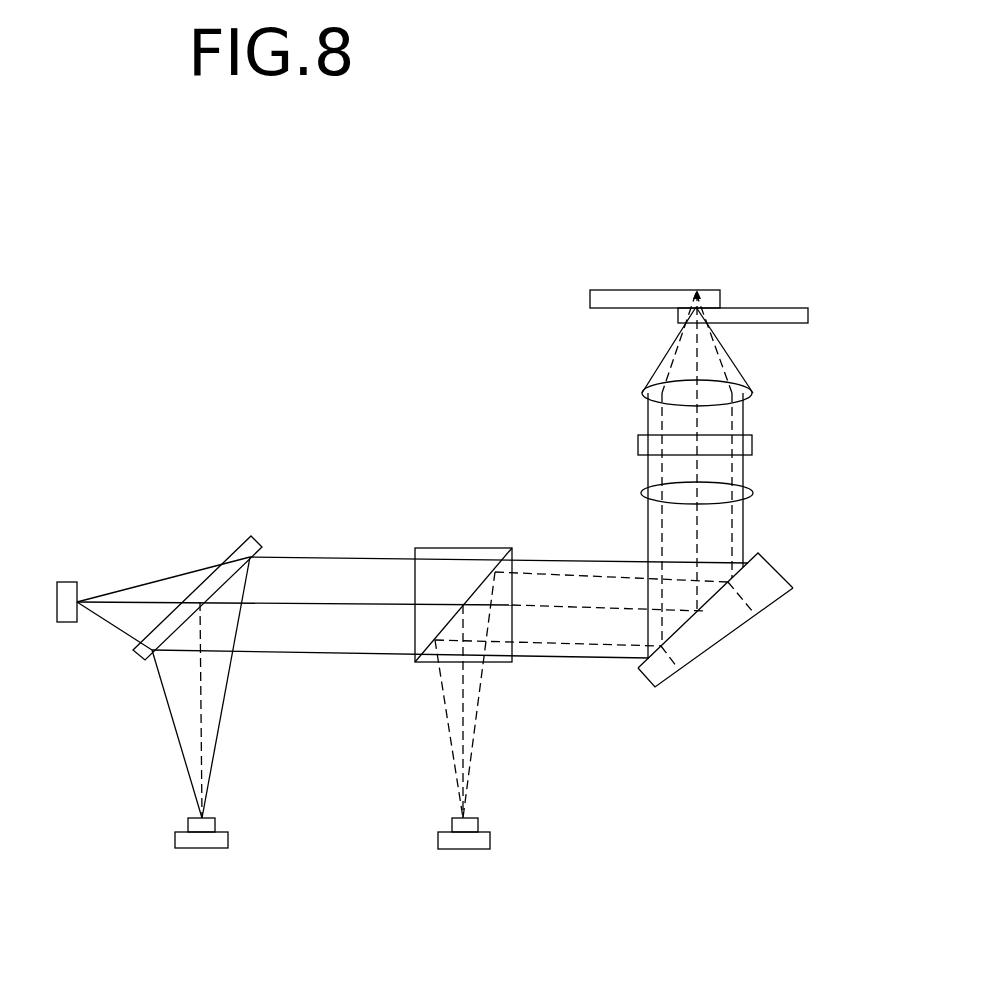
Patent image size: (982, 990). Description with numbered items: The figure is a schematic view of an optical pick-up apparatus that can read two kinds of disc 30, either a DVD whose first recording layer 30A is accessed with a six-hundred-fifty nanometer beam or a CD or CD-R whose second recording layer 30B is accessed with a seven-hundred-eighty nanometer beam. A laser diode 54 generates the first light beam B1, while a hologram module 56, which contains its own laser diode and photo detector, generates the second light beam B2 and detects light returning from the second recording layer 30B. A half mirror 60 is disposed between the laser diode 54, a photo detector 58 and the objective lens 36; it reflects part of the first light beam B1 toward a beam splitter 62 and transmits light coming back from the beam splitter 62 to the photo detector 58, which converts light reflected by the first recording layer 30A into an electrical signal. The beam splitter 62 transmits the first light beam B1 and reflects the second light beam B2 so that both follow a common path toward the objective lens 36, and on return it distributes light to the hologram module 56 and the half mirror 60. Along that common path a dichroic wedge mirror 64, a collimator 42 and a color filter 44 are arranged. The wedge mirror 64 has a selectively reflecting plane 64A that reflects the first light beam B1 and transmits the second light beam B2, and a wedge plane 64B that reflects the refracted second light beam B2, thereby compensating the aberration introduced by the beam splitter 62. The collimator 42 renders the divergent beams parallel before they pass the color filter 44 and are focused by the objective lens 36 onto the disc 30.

The disc 30 is at (730, 234).
The first recording layer 30A is at (777, 308).
The second recording layer 30B is at (622, 290).
The objective lens 36 is at (753, 393).
The color filter 44 is at (752, 443).
The collimator 42 is at (753, 490).
The dichroic wedge mirror 64 is at (877, 610).
The selectively reflecting plane 64A is at (735, 570).
The wedge plane 64B is at (717, 645).
The photo detector 58 is at (63, 582).
The half mirror 60 is at (242, 543).
The beam splitter 62 is at (455, 548).
The laser diode 54 is at (228, 838).
The hologram module 56 is at (490, 838).
The first light beam B1 is at (217, 748).
The second light beam B2 is at (470, 755).